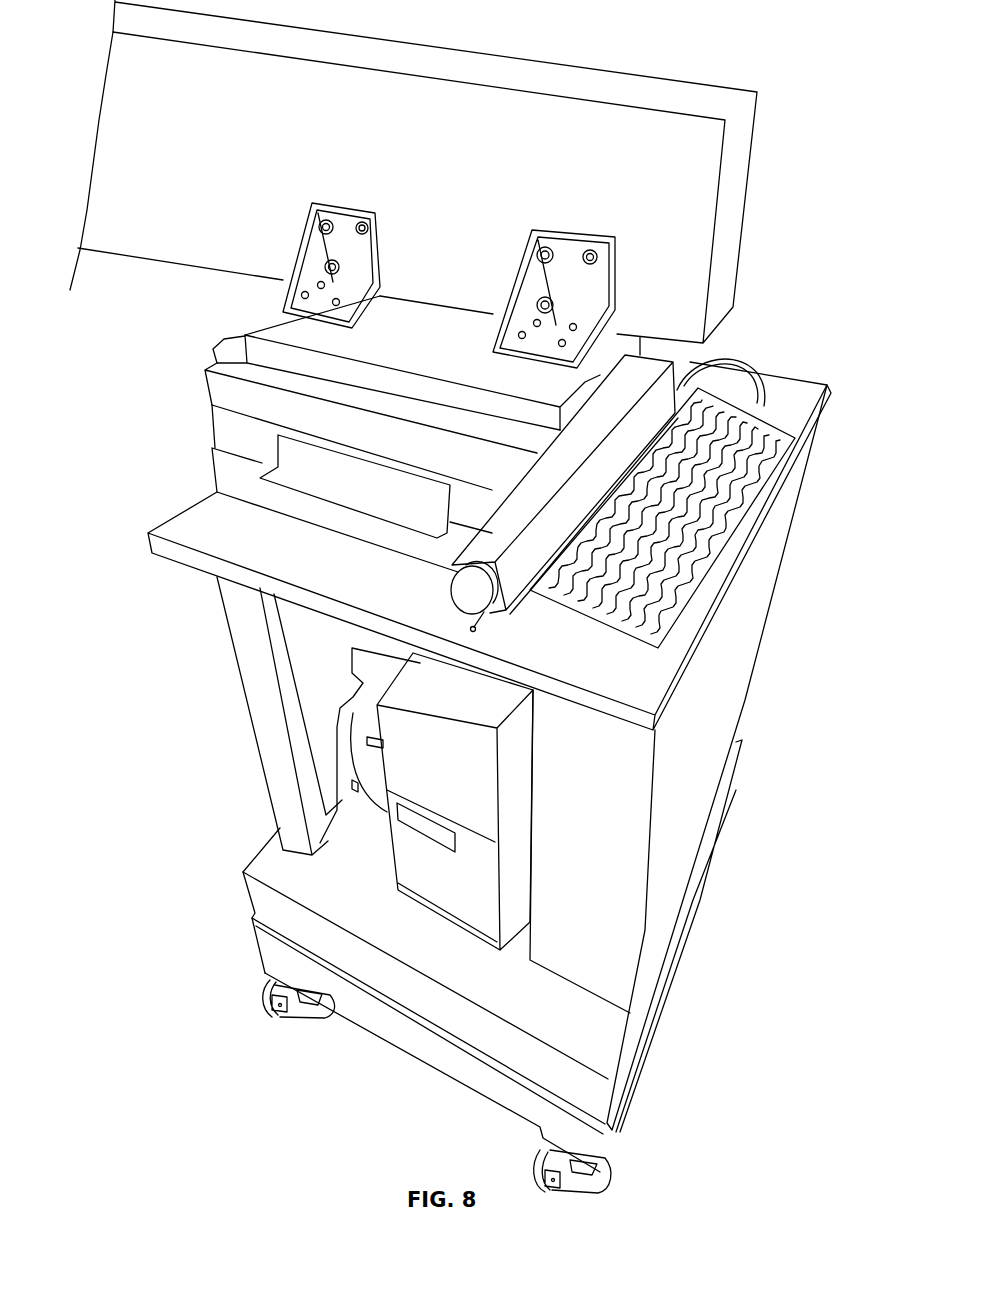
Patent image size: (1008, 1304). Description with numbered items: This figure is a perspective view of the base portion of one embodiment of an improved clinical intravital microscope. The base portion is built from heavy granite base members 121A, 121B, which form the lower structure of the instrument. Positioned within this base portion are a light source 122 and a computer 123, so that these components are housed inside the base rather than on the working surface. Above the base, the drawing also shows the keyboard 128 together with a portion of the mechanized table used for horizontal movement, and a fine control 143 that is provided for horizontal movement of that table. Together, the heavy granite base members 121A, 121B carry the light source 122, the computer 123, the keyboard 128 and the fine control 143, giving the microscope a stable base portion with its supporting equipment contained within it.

The heavy granite base member 121A is at (337, 950).
The heavy granite base member 121B is at (595, 882).
The light source 122 is at (362, 755).
The computer 123 is at (440, 880).
The keyboard 128 is at (705, 552).
The fine control 143 is at (460, 590).